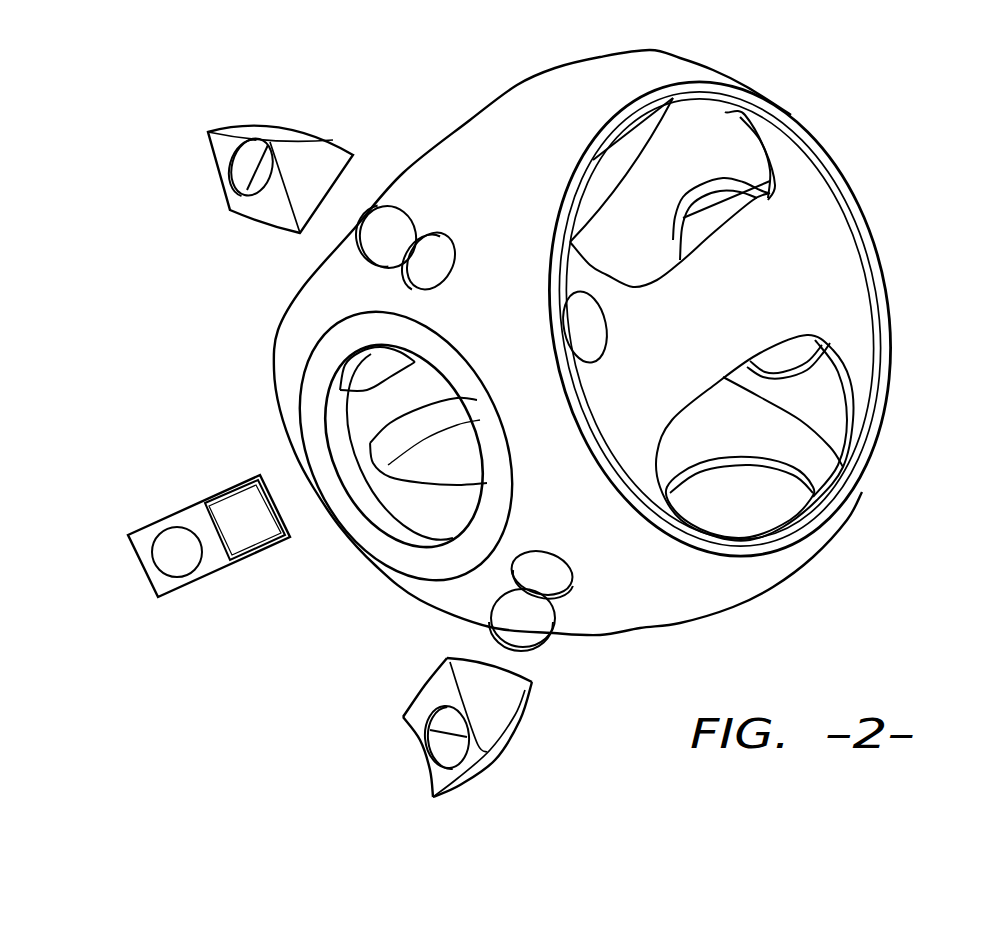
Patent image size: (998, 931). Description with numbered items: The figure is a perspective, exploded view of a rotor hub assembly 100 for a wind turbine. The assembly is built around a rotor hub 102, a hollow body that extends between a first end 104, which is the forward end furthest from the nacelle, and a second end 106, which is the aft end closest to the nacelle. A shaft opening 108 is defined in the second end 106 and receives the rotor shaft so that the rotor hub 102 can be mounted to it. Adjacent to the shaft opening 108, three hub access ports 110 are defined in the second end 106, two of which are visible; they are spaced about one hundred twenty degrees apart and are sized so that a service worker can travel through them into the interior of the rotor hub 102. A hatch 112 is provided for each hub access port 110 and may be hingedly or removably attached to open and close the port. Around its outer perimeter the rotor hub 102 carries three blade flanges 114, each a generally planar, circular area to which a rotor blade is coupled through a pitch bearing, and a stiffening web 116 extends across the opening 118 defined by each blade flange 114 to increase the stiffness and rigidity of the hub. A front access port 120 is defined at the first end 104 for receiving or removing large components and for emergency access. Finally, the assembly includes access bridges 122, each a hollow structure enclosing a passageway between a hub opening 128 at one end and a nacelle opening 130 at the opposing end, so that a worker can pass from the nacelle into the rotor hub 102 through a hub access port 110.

The rotor hub assembly 100 is at (937, 105).
The rotor hub 102 is at (517, 90).
The first end 104 is at (820, 150).
The second end 106 is at (397, 553).
The shaft opening 108 is at (340, 460).
The hub access port 110 is at (440, 232).
The hatch 112 is at (371, 245).
The blade flange 114 is at (470, 120).
The stiffening web 116 is at (753, 323).
The opening 118 is at (837, 480).
The front access port 120 is at (757, 200).
The access bridge 122 is at (245, 115).
The hub opening 128 is at (337, 183).
The nacelle opening 130 is at (230, 177).